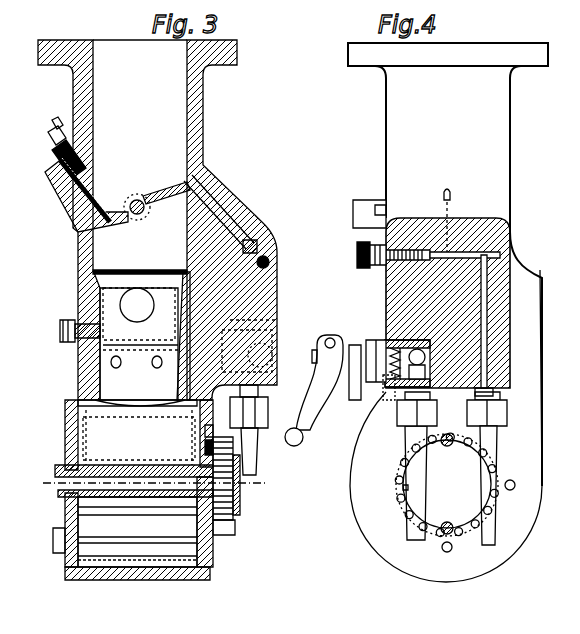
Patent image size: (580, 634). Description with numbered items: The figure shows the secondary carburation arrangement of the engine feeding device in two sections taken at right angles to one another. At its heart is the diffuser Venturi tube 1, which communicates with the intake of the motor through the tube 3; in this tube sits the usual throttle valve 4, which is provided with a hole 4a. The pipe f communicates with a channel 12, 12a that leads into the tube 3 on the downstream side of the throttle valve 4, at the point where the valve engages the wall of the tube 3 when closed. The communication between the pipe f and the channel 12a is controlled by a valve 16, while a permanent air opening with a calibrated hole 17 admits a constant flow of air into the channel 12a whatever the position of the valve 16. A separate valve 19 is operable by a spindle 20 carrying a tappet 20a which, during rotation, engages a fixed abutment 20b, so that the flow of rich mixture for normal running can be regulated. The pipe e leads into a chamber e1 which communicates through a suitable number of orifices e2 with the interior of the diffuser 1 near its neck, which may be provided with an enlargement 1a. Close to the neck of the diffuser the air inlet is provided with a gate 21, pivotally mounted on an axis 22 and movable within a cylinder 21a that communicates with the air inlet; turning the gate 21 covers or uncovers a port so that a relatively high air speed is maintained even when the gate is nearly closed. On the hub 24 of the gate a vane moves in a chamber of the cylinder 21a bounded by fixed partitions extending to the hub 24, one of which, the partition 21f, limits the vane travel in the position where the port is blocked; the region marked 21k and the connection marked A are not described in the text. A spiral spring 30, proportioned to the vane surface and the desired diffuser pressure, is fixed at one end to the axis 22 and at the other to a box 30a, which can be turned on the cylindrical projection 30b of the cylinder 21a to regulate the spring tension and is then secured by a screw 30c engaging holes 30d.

In FIG. 3, the diffuser Venturi tube 1 is at (265, 322).
In FIG. 3, the enlargement 1a is at (90, 340).
In FIG. 3, the tube 3 is at (205, 99).
In FIG. 4, the tube 3 is at (449, 100).
In FIG. 3, the throttle valve 4 is at (138, 78).
In FIG. 3, the hole 4a is at (207, 172).
In FIG. 3, the channel 12 is at (262, 297).
In FIG. 4, the channel 12 is at (510, 266).
In FIG. 3, the channel 12a is at (233, 212).
In FIG. 4, the channel 12a is at (452, 205).
In FIG. 3, the valve 16 is at (255, 242).
In FIG. 4, the valve 16 is at (408, 232).
In FIG. 3, the calibrated hole 17 is at (270, 263).
In FIG. 4, the valve 19 is at (390, 400).
In FIG. 3, the spindle 20 is at (262, 347).
In FIG. 4, the spindle 20 is at (324, 367).
In FIG. 3, the tappet 20a is at (262, 333).
In FIG. 4, the tappet 20a is at (351, 400).
In FIG. 3, the fixed abutment 20b is at (236, 406).
In FIG. 3, the gate 21 is at (78, 402).
In FIG. 3, the cylinder 21a is at (213, 562).
In FIG. 4, the cylinder 21a is at (508, 540).
In FIG. 3, the fixed partition 21f is at (140, 507).
In FIG. 3, the chamber wall 21k is at (195, 507).
In FIG. 3, the axis 22 is at (110, 505).
In FIG. 3, the hub 24 is at (118, 465).
In FIG. 3, the spiral spring 30 is at (235, 512).
In FIG. 3, the box 30a is at (238, 500).
In FIG. 4, the box 30a is at (447, 485).
In FIG. 3, the cylindrical projection 30b is at (203, 458).
In FIG. 3, the screw 30c is at (203, 442).
In FIG. 4, the screw 30c is at (447, 434).
In FIG. 4, the holes 30d is at (403, 488).
In FIG. 4, the connection A is at (353, 207).
In FIG. 3, the pipe e is at (250, 448).
In FIG. 4, the pipe e is at (405, 350).
In FIG. 3, the chamber e1 is at (175, 343).
In FIG. 3, the orifices e2 is at (112, 370).
In FIG. 4, the pipe f is at (497, 470).